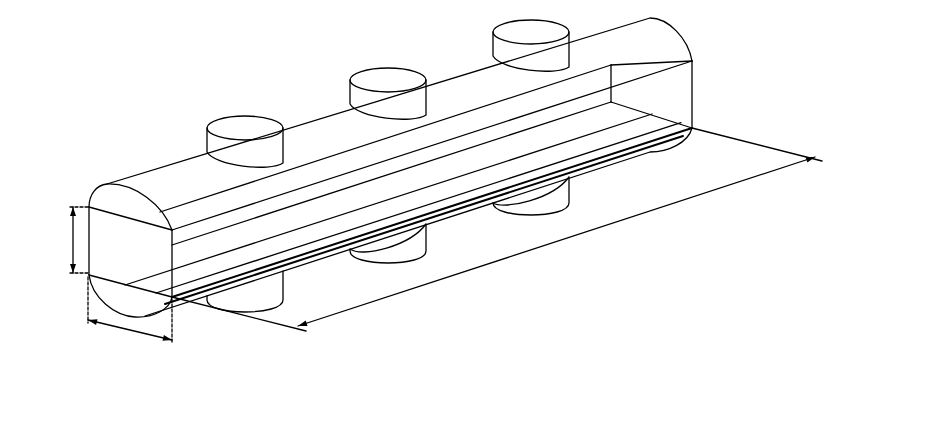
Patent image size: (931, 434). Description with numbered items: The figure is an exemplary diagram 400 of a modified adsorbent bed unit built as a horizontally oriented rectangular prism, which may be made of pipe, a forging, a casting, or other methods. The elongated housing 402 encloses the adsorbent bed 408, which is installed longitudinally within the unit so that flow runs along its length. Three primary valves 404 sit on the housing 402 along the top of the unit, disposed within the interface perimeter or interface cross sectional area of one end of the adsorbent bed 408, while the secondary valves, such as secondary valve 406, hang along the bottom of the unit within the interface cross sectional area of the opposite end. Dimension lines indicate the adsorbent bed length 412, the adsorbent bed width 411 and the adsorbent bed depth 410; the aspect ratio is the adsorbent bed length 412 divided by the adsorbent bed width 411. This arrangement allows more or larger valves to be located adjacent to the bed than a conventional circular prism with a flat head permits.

The diagram 400 is at (187, 27).
The housing 402 is at (172, 176).
The primary valves 404 is at (352, 93).
The secondary valve 406 is at (285, 290).
The adsorbent bed 408 is at (675, 91).
The adsorbent bed depth 410 is at (165, 336).
The adsorbent bed width 411 is at (72, 247).
The adsorbent bed length 412 is at (557, 243).